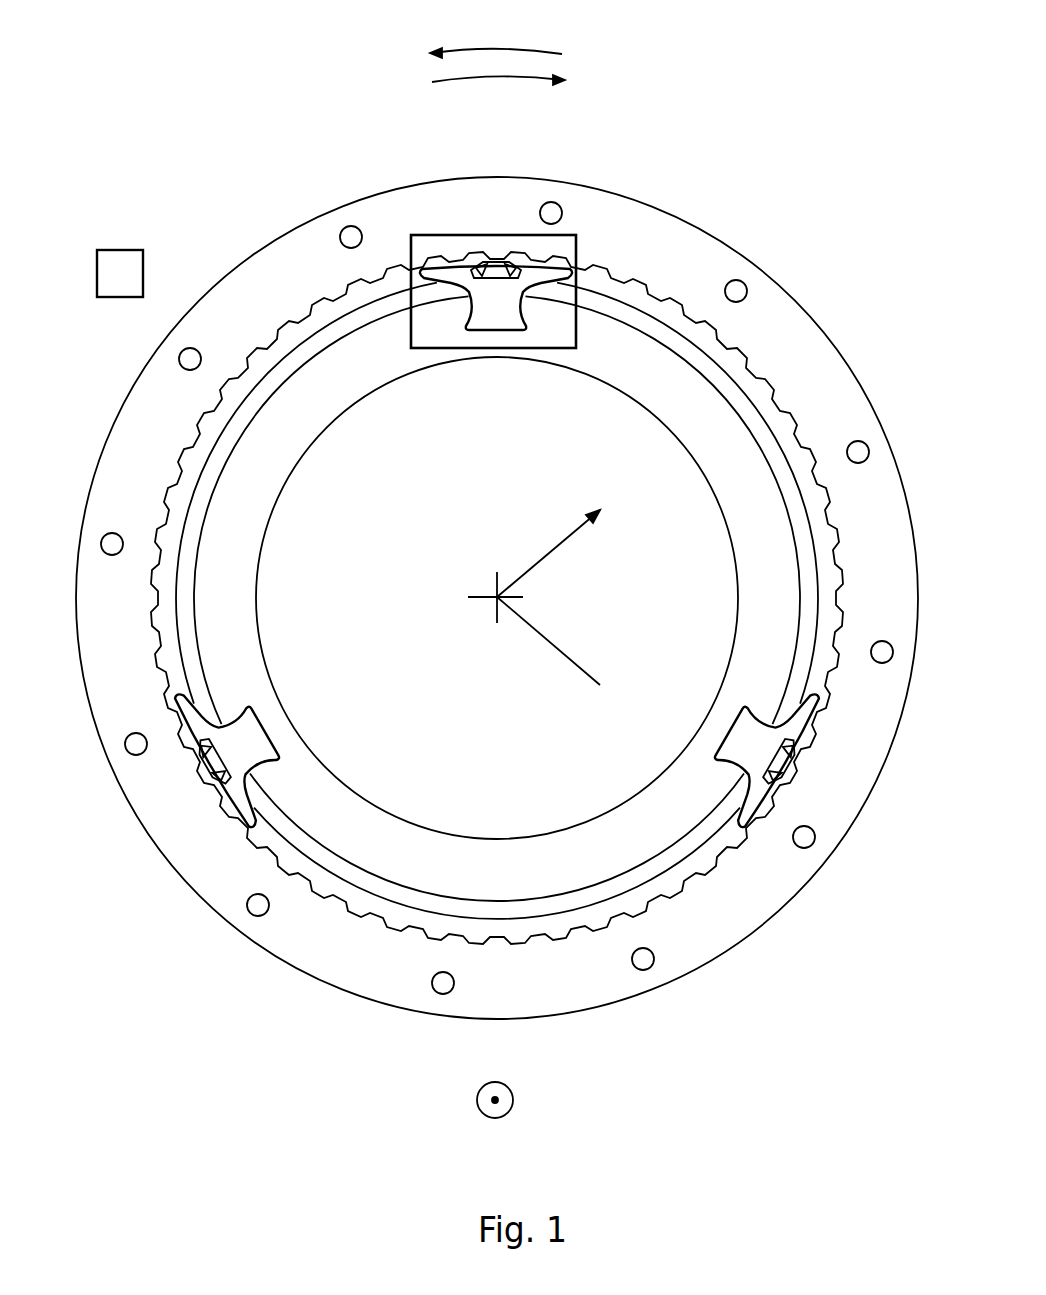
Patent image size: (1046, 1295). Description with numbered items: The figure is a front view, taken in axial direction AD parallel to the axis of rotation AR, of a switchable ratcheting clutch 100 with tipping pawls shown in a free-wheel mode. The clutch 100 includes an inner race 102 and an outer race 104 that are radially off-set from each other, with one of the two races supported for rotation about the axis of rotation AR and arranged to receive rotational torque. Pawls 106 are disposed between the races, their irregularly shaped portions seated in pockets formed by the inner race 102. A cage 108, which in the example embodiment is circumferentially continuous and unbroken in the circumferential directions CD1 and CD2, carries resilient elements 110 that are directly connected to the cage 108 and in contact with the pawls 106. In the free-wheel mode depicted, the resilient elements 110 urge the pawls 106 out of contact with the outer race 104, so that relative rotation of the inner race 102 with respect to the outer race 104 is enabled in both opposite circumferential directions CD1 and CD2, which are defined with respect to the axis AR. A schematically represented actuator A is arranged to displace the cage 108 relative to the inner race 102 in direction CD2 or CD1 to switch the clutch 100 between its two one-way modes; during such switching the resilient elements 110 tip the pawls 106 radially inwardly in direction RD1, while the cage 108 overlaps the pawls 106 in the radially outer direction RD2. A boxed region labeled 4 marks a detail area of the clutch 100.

The switchable ratcheting clutch 100 is at (815, 184).
The inner race 102 is at (318, 436).
The outer race 104 is at (242, 260).
The pawls 106 is at (237, 745).
The cage 108 is at (752, 378).
The resilient elements 110 is at (197, 760).
The detail view region (FIG. 4) 4 is at (577, 236).
The actuator A is at (250, 368).
The axis of rotation AR is at (497, 596).
The radially inward direction RD1 is at (555, 655).
The radially outer direction RD2 is at (553, 548).
The circumferential direction CD1 is at (505, 50).
The circumferential direction CD2 is at (535, 80).
The axial direction AD is at (495, 1100).